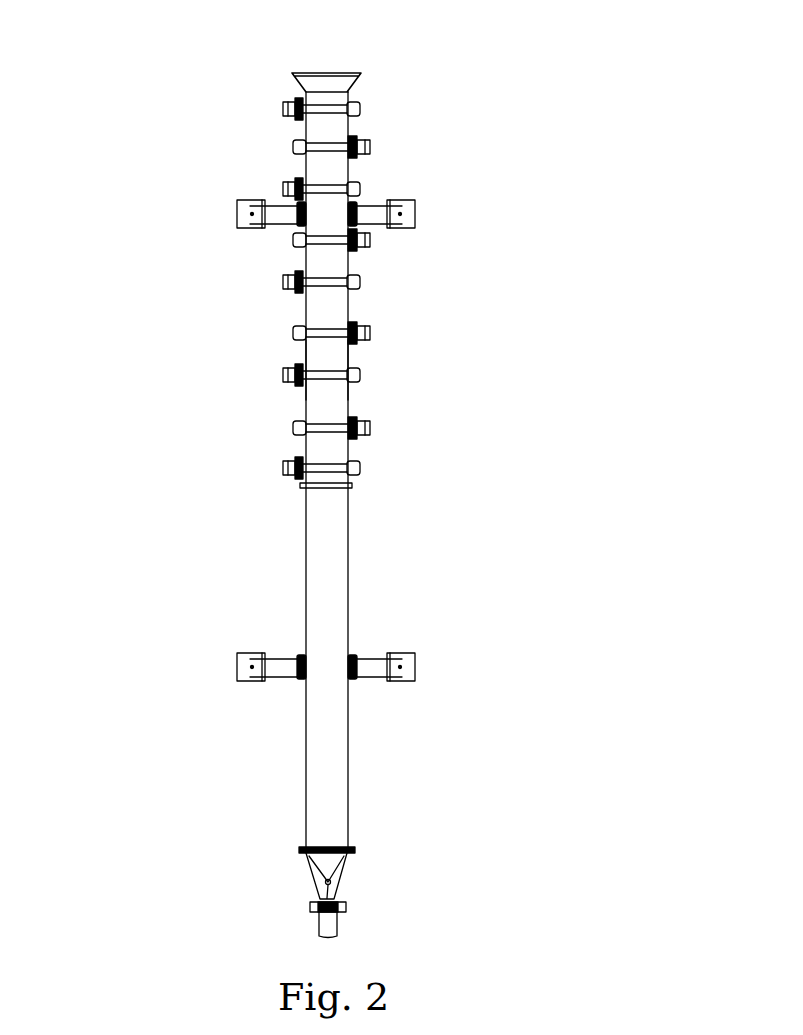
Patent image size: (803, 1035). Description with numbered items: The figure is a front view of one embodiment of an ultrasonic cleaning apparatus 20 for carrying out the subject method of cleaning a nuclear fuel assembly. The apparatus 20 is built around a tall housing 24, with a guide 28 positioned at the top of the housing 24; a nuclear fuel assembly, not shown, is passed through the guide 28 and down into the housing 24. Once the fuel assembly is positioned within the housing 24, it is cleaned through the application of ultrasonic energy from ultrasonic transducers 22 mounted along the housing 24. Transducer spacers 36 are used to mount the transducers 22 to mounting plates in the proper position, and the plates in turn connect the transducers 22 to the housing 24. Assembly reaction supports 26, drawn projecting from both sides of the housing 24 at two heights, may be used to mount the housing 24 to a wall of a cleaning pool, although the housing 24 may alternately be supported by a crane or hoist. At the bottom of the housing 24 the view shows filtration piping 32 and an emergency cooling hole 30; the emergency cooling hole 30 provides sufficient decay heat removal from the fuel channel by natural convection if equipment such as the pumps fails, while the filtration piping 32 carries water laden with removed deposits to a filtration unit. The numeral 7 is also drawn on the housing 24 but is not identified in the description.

The ultrasonic cleaning apparatus 20 is at (118, 65).
The column section 7 is at (302, 345).
The ultrasonic transducers 22 is at (292, 186).
The housing 24 is at (348, 530).
The assembly reaction supports 26 is at (414, 203).
The guide 28 is at (340, 72).
The emergency cooling hole 30 is at (338, 880).
The filtration piping 32 is at (320, 933).
The transducer spacers 36 is at (296, 96).